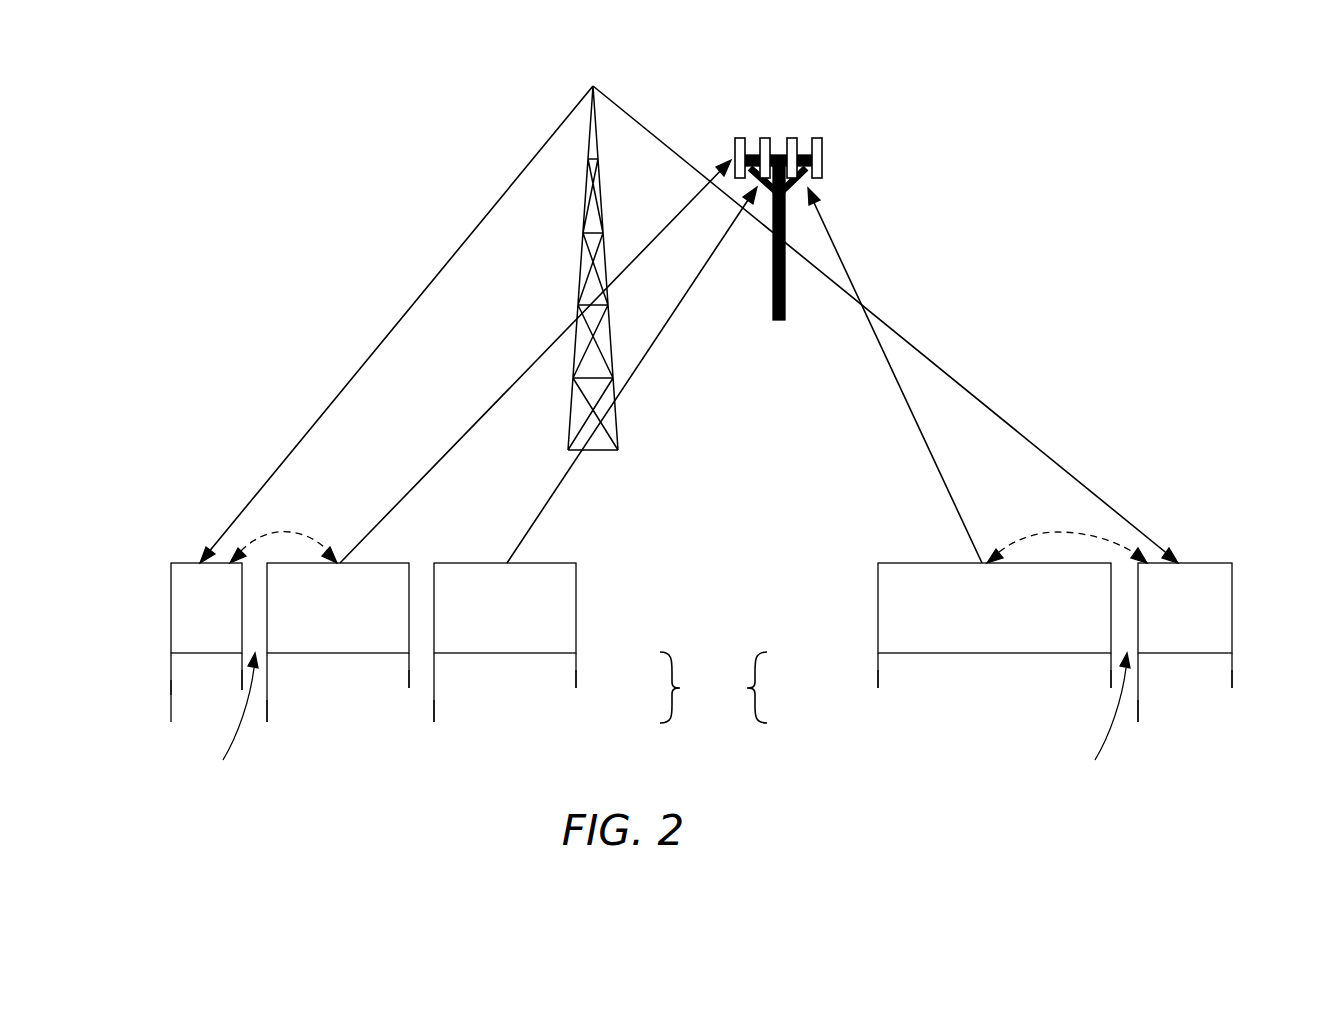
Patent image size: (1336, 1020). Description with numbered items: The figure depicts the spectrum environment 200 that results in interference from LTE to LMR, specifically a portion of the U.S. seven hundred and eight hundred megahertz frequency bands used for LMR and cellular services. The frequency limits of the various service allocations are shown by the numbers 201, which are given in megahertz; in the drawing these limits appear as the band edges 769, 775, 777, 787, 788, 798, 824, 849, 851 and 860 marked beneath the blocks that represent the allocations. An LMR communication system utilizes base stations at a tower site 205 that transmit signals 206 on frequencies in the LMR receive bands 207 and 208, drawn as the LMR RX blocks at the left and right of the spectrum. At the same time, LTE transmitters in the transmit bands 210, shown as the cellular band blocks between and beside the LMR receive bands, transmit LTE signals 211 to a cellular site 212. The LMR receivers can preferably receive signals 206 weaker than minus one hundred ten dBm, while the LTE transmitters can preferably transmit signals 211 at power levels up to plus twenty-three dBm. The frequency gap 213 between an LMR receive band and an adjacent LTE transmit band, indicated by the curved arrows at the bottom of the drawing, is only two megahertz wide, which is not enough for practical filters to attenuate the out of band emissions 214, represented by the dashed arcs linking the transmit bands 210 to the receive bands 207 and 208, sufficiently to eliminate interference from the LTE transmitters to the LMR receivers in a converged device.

The spectrum environment 200 is at (197, 100).
The frequency limits 201 is at (713, 687).
The tower site 205 is at (582, 246).
The signals 206 is at (359, 366).
The LMR receive band 207 is at (171, 607).
The LMR receive band 208 is at (1232, 607).
The transmit bands 210 is at (390, 563).
The LTE signals 211 is at (478, 421).
The cellular site 212 is at (790, 138).
The frequency gap 213 is at (665, 719).
The out of band emissions 214 is at (293, 533).
The 769 MHz band edge 769 is at (171, 687).
The 775 MHz band edge 775 is at (242, 677).
The 777 MHz band edge 777 is at (267, 710).
The 787 MHz band edge 787 is at (409, 677).
The 788 MHz band edge 788 is at (434, 710).
The 798 MHz band edge 798 is at (576, 677).
The 824 MHz band edge 824 is at (878, 677).
The 849 MHz band edge 849 is at (1111, 677).
The 851 MHz band edge 851 is at (1138, 710).
The 860 MHz band edge 860 is at (1232, 677).